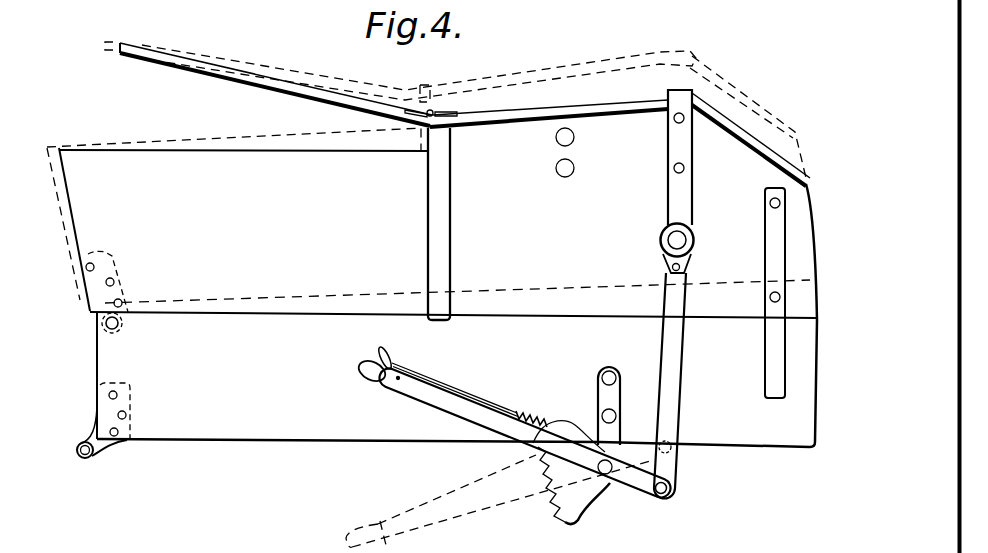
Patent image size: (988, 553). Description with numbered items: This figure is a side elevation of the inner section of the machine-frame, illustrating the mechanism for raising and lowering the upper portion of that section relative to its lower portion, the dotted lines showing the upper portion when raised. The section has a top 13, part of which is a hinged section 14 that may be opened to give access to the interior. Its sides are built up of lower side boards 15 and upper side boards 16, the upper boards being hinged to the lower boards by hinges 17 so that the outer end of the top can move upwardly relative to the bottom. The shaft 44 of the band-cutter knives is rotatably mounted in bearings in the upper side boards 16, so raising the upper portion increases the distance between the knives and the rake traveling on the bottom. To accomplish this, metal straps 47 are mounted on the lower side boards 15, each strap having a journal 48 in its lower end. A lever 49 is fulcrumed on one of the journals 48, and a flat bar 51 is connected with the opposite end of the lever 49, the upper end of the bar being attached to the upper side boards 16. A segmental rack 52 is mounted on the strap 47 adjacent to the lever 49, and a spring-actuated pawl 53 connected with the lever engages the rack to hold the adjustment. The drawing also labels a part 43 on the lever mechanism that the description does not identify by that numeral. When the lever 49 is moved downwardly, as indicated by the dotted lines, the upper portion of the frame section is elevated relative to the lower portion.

The top 13 is at (548, 113).
The hinged section 14 is at (285, 88).
The lower side boards 15 is at (447, 321).
The upper side boards 16 is at (432, 224).
The hinges 17 is at (95, 303).
The lever arm 43 is at (508, 446).
The shaft of the band-cutter knives 44 is at (679, 240).
The metal straps 47 is at (613, 401).
The journal 48 is at (609, 488).
The lever 49 is at (656, 501).
The flat bar 51 is at (672, 390).
The segmental rack 52 is at (550, 461).
The spring-actuated pawl 53 is at (462, 392).